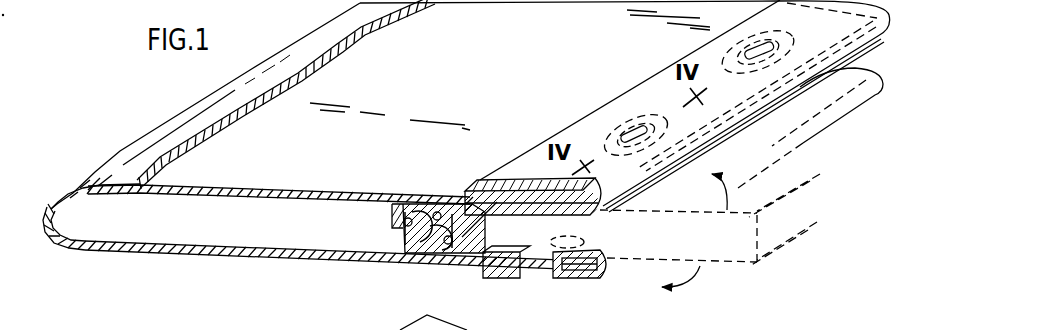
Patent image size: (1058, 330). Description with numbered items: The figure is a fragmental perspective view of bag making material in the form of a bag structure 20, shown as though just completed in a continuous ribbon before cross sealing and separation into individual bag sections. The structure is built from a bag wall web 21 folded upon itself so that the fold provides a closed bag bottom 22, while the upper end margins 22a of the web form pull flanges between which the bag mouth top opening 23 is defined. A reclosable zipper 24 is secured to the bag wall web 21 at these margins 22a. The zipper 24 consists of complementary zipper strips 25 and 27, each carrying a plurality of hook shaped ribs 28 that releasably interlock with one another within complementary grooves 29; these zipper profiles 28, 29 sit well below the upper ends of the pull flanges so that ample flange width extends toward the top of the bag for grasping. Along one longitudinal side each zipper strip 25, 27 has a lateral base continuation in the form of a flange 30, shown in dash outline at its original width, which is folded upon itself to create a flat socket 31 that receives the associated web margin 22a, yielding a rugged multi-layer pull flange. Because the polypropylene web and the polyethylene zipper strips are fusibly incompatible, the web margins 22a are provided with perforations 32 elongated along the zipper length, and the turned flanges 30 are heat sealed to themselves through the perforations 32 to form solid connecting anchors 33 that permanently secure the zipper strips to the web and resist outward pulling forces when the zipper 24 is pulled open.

The bag structure 20 is at (200, 88).
The bag wall web 21 is at (186, 246).
The closed bag bottom 22 is at (47, 208).
The upper end margins 22a is at (516, 178).
The bag mouth top opening 23 is at (630, 230).
The reclosable zipper 24 is at (381, 228).
The zipper strip 25 is at (422, 212).
The zipper strip 27 is at (440, 251).
The hook shaped ribs 28 is at (452, 226).
The complementary grooves 29 is at (404, 204).
The flange 30 is at (500, 249).
The flat socket 31 is at (603, 200).
The perforations 32 is at (613, 145).
The anchors 33 is at (620, 147).